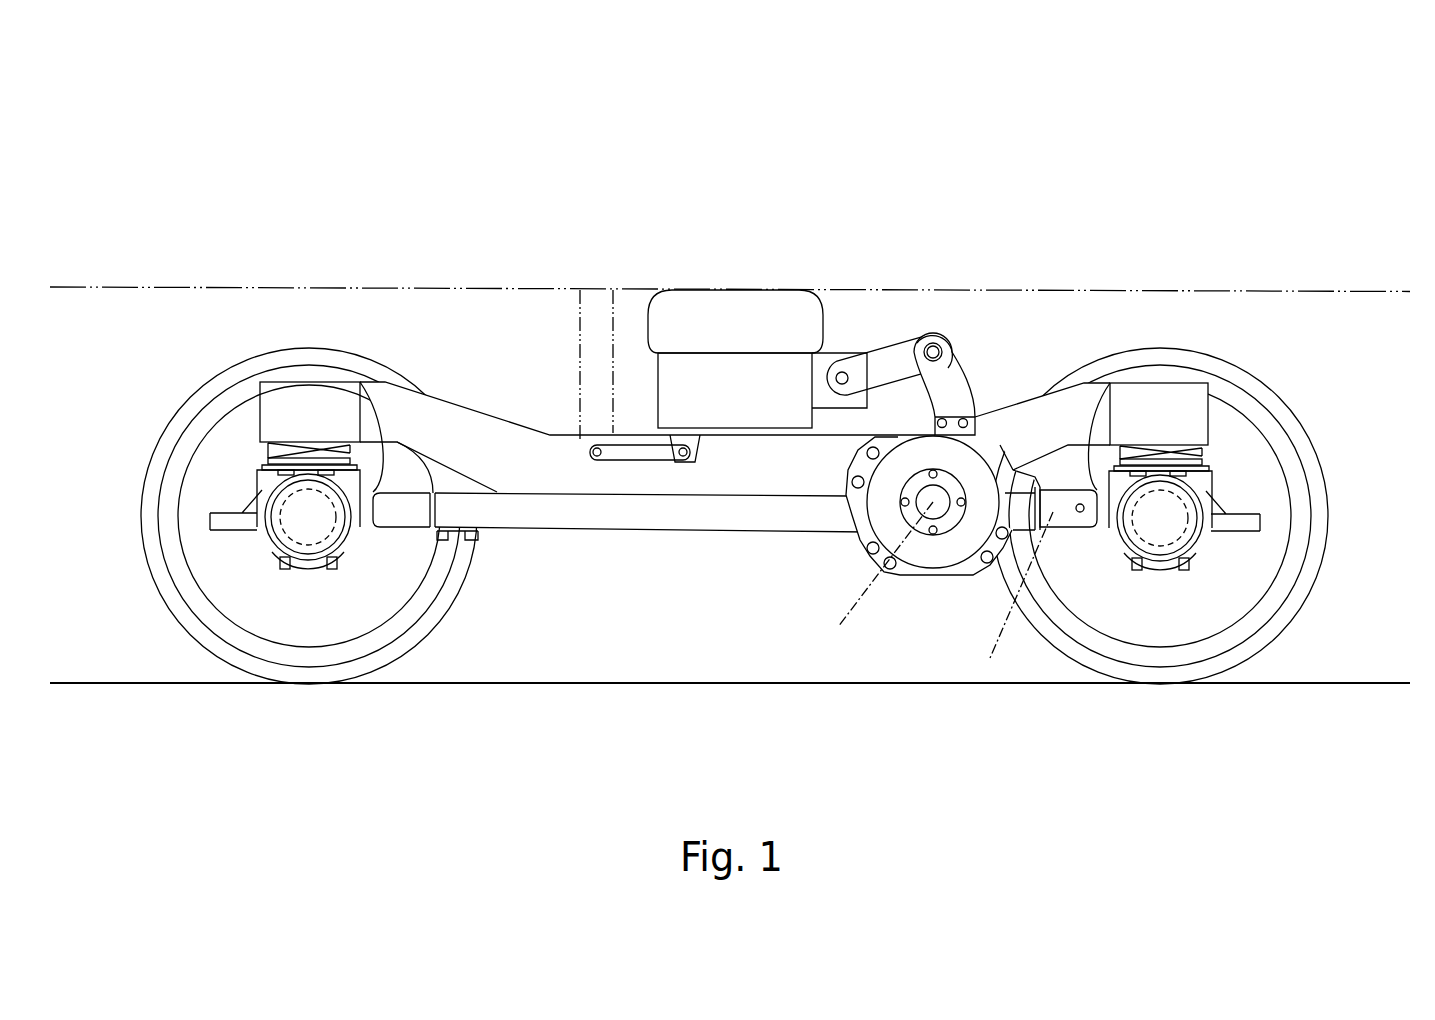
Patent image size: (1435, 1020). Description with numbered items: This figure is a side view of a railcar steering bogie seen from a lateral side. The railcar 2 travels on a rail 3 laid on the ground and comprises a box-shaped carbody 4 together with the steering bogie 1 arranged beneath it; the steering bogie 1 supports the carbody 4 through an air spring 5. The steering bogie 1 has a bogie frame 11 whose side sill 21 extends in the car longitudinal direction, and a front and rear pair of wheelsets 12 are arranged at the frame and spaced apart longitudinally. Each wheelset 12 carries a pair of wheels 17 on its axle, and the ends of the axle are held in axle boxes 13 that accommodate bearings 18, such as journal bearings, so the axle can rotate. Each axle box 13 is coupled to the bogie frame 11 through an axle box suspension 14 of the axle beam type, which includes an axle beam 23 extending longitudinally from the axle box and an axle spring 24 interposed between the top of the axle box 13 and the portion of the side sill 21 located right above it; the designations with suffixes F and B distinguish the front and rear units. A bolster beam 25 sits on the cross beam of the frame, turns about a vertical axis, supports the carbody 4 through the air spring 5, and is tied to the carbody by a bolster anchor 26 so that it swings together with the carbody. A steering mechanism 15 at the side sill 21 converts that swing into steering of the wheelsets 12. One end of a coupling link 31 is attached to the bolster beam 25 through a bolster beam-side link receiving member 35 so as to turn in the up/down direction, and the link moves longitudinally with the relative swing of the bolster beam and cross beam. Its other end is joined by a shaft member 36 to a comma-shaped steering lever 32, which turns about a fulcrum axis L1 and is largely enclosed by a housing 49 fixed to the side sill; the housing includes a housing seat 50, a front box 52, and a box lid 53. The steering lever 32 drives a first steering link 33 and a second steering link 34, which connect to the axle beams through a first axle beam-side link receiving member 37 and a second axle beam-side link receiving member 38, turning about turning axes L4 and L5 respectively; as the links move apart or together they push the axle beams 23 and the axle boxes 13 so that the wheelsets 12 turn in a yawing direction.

The steering bogie 1 is at (1231, 315).
The railcar 2 is at (1302, 139).
The rail 3 is at (1378, 681).
The carbody 4 is at (744, 222).
The air spring 5 is at (827, 358).
The bogie frame 11 is at (511, 382).
The wheelset 12 is at (181, 363).
The axle box 13 is at (266, 547).
The axle box suspension 14 is at (405, 550).
The steering mechanism 15 is at (998, 348).
The wheel 17 is at (173, 607).
The bearing 18 is at (305, 570).
The side sill 21 is at (560, 440).
The axle beam 23 is at (385, 482).
The axle spring 24 is at (318, 452).
The bolster beam 25 is at (742, 375).
The bolster anchor 26 is at (640, 450).
The coupling link 31 is at (882, 352).
The steering lever 32 is at (975, 394).
The first steering link 33 is at (1020, 473).
The second steering link 34 is at (665, 516).
The bolster beam-side link receiving member 35 is at (887, 362).
The shaft member 36 is at (935, 350).
The first axle beam-side link receiving member 37 is at (1063, 530).
The second axle beam-side link receiving member 38 is at (395, 528).
The housing 49 is at (855, 532).
The housing seat 50 is at (973, 575).
The front box 52 is at (935, 557).
The box lid 53 is at (922, 520).
The fulcrum axis L1 is at (867, 577).
The turning axis L4 is at (1004, 596).
The turning axis L5 is at (458, 534).